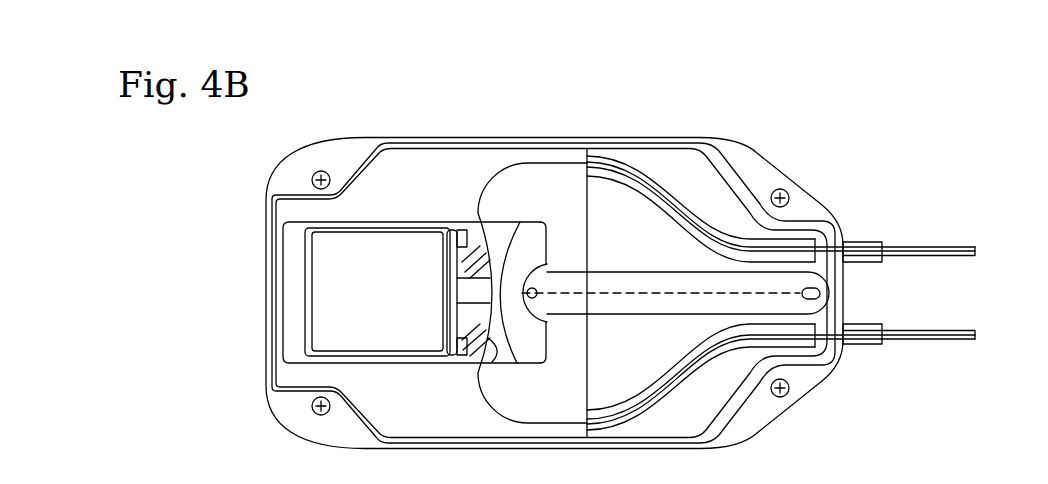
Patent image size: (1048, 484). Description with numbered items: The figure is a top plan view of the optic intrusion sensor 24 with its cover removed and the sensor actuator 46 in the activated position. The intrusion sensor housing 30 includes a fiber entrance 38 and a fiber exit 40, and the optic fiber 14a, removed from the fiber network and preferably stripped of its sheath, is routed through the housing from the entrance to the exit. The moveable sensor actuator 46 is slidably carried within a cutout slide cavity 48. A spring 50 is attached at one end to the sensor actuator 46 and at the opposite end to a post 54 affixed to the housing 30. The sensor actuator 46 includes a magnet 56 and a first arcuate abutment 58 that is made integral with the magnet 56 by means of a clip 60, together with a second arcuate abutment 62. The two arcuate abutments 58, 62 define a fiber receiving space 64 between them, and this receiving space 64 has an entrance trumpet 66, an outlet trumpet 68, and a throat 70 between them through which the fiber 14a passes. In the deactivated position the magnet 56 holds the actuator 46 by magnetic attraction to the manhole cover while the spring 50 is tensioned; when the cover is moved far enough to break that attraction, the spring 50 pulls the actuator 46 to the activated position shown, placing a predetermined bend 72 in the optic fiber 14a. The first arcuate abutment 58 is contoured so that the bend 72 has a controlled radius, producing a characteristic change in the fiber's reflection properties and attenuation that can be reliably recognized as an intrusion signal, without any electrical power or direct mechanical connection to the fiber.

The optic fiber 14a is at (528, 163).
The sensor 24 is at (238, 324).
The intrusion sensor housing 30 is at (777, 170).
The fiber entrance 38 is at (862, 241).
The fiber exit 40 is at (861, 346).
The sensor actuator 46 is at (389, 306).
The cutout slide cavity 48 is at (293, 244).
The spring 50 is at (600, 293).
The post 54 is at (822, 293).
The magnet 56 is at (360, 246).
The first arcuate abutment 58 is at (503, 306).
The clip 60 is at (312, 275).
The second arcuate abutment 62 is at (533, 237).
The fiber receiving space 64 is at (583, 138).
The entrance trumpet 66 is at (473, 222).
The outlet trumpet 68 is at (512, 362).
The throat 70 is at (500, 295).
The predetermined bend 72 is at (489, 360).